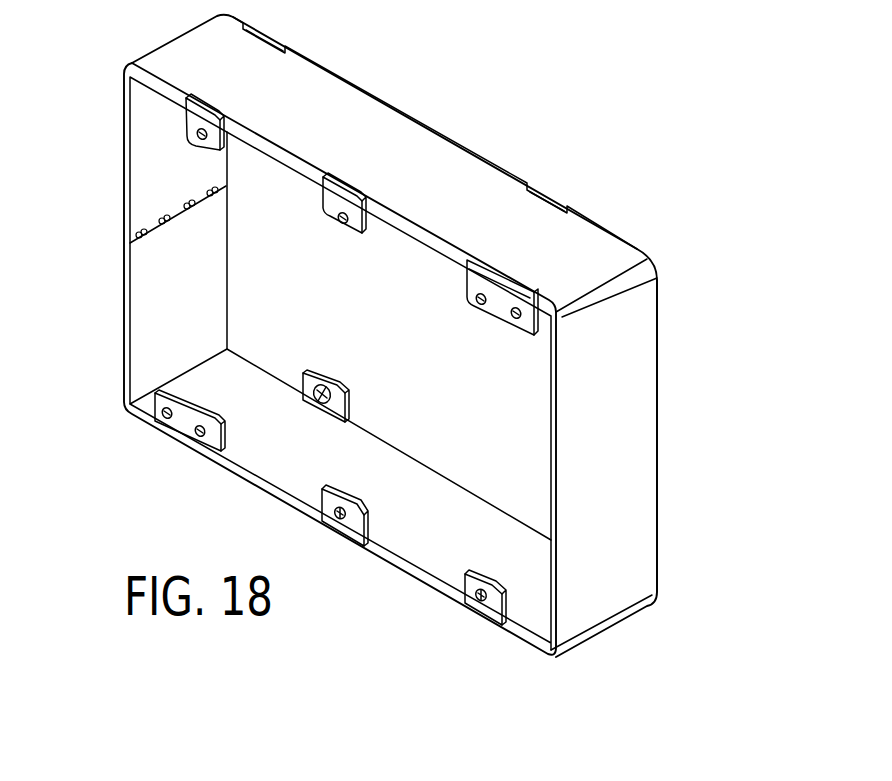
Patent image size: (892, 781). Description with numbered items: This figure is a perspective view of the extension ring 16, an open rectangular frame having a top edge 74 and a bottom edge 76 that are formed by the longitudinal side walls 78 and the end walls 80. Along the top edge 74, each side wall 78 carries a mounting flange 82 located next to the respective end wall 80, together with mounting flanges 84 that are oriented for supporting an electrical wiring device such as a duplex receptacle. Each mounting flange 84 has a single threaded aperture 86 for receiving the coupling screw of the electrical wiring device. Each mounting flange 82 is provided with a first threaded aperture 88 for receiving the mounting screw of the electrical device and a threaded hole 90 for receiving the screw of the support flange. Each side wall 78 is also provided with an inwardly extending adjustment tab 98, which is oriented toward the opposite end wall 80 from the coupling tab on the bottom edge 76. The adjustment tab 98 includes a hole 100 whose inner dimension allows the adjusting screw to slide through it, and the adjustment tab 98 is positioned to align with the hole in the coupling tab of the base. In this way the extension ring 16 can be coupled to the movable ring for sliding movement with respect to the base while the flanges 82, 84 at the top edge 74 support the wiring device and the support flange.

The extension ring 16 is at (398, 108).
The top edge 74 is at (405, 225).
The bottom edge 76 is at (478, 155).
The longitudinal side wall 78 is at (563, 247).
The end wall 80 is at (163, 271).
The mounting flange 82 is at (190, 400).
The mounting flange 84 is at (188, 125).
The threaded aperture 86 is at (199, 136).
The first threaded aperture 88 is at (480, 300).
The threaded hole 90 is at (516, 318).
The adjustment tab 98 is at (348, 407).
The hole 100 is at (329, 388).